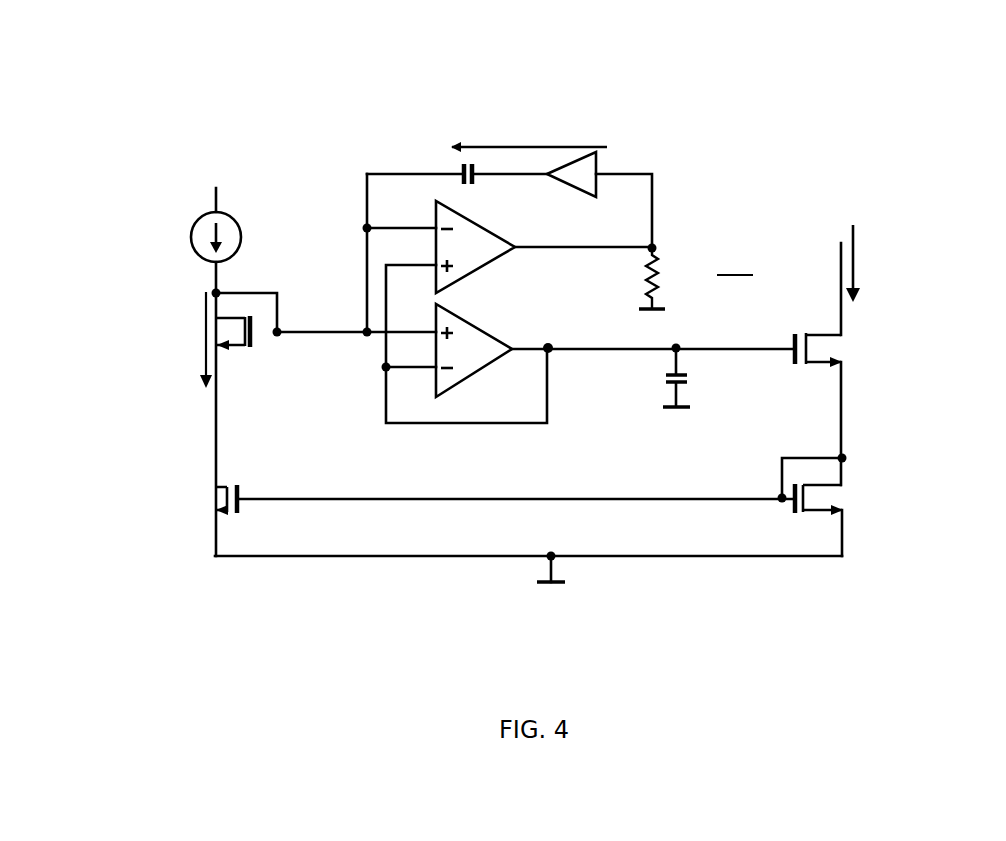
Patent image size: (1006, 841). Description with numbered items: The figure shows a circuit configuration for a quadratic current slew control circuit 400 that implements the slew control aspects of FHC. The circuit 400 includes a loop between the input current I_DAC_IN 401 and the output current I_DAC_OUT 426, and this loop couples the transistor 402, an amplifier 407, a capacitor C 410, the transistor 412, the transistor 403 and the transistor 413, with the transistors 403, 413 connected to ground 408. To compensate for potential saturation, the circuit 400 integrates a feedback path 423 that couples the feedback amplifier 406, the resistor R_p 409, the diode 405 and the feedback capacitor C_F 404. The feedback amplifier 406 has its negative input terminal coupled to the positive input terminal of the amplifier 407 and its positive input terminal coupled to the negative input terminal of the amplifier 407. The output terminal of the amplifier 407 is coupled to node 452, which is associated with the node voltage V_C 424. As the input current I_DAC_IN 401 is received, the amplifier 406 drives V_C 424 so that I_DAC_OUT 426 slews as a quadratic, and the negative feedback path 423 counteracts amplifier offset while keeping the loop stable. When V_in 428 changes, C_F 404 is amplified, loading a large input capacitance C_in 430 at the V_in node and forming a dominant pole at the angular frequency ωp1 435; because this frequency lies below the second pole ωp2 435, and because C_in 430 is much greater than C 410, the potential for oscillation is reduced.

The quadratic current slew control circuit 400 is at (180, 80).
The input current I_DAC_IN 401 is at (196, 221).
The transistor 402 is at (247, 346).
The transistor 403 is at (238, 500).
The feedback capacitor C_F 404 is at (462, 167).
The diode 405 is at (596, 153).
The feedback amplifier 406 is at (503, 239).
The amplifier 407 is at (479, 328).
The ground 408 is at (537, 583).
The resistor R_p 409 is at (648, 270).
The capacitor C 410 is at (667, 384).
The transistor 412 is at (795, 364).
The transistor 413 is at (795, 505).
The feedback path 423 is at (523, 118).
The node voltage V_C 424 is at (562, 328).
The output current I_DAC_OUT 426 is at (875, 241).
The input voltage V_in 428 is at (356, 302).
The input capacitance C_in 430 is at (267, 375).
The angular frequency (pole) 435 is at (288, 295).
The node 452 is at (533, 357).